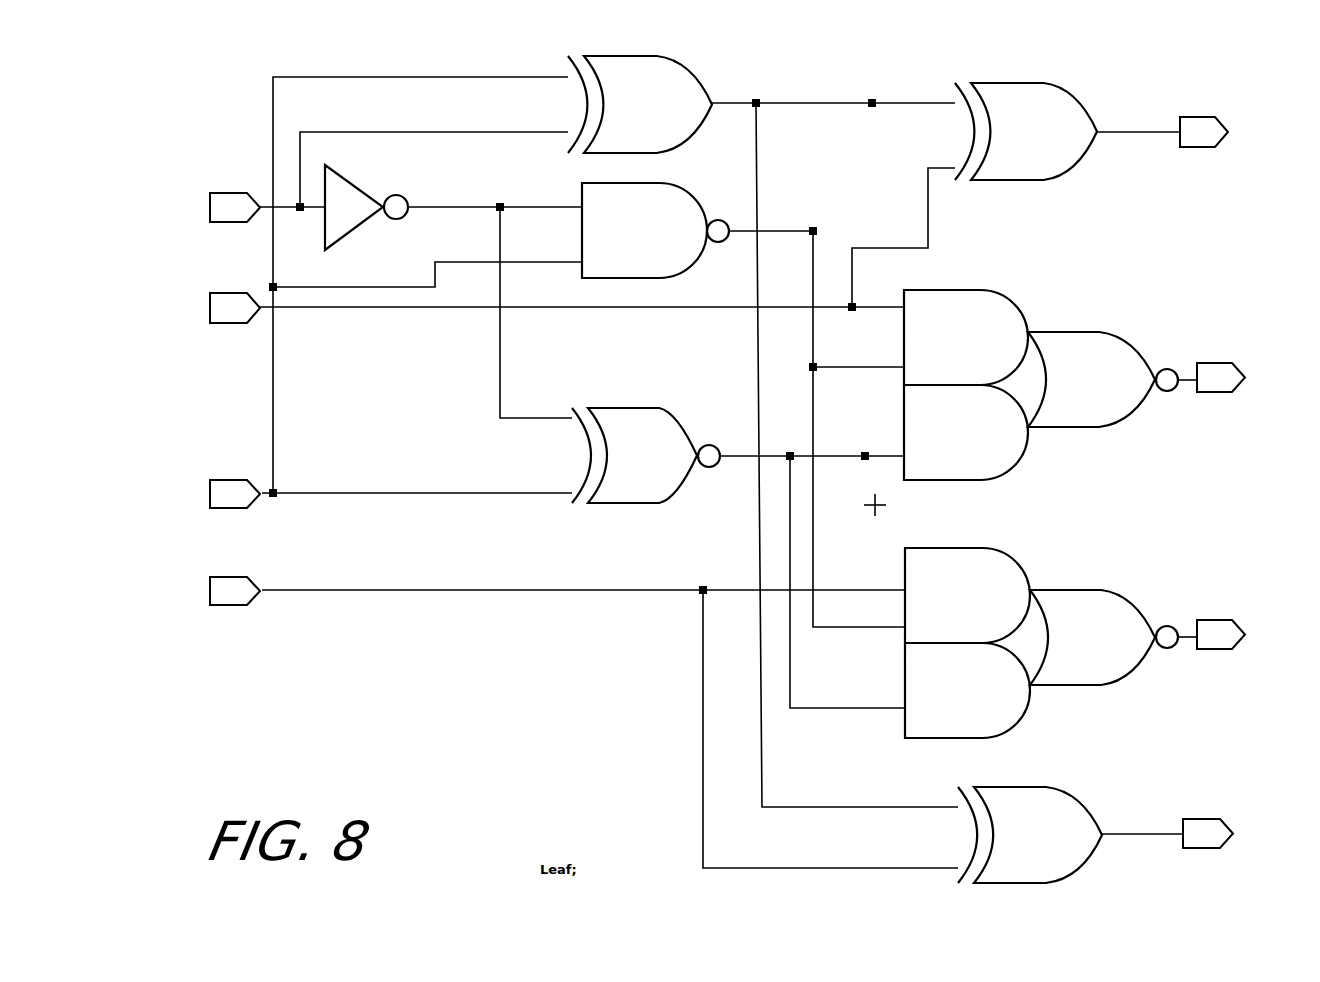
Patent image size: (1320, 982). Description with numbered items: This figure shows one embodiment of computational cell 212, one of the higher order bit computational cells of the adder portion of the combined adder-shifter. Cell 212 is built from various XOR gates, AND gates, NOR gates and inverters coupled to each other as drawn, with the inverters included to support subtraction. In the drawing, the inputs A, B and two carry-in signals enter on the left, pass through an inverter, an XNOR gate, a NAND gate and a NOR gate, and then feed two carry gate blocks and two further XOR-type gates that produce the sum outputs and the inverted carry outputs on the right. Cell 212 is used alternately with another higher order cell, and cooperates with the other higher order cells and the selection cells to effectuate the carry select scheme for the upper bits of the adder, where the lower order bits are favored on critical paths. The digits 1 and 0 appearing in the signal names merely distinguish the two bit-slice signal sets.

The computational cell 212 is at (1240, 92).
The bit-1 slice (cin_1, s_1, cnot_1 signals and gates) 1 is at (731, 281).
The bit-0 slice (cin_0, s_0, cnot_0 signals and gates) 0 is at (731, 715).